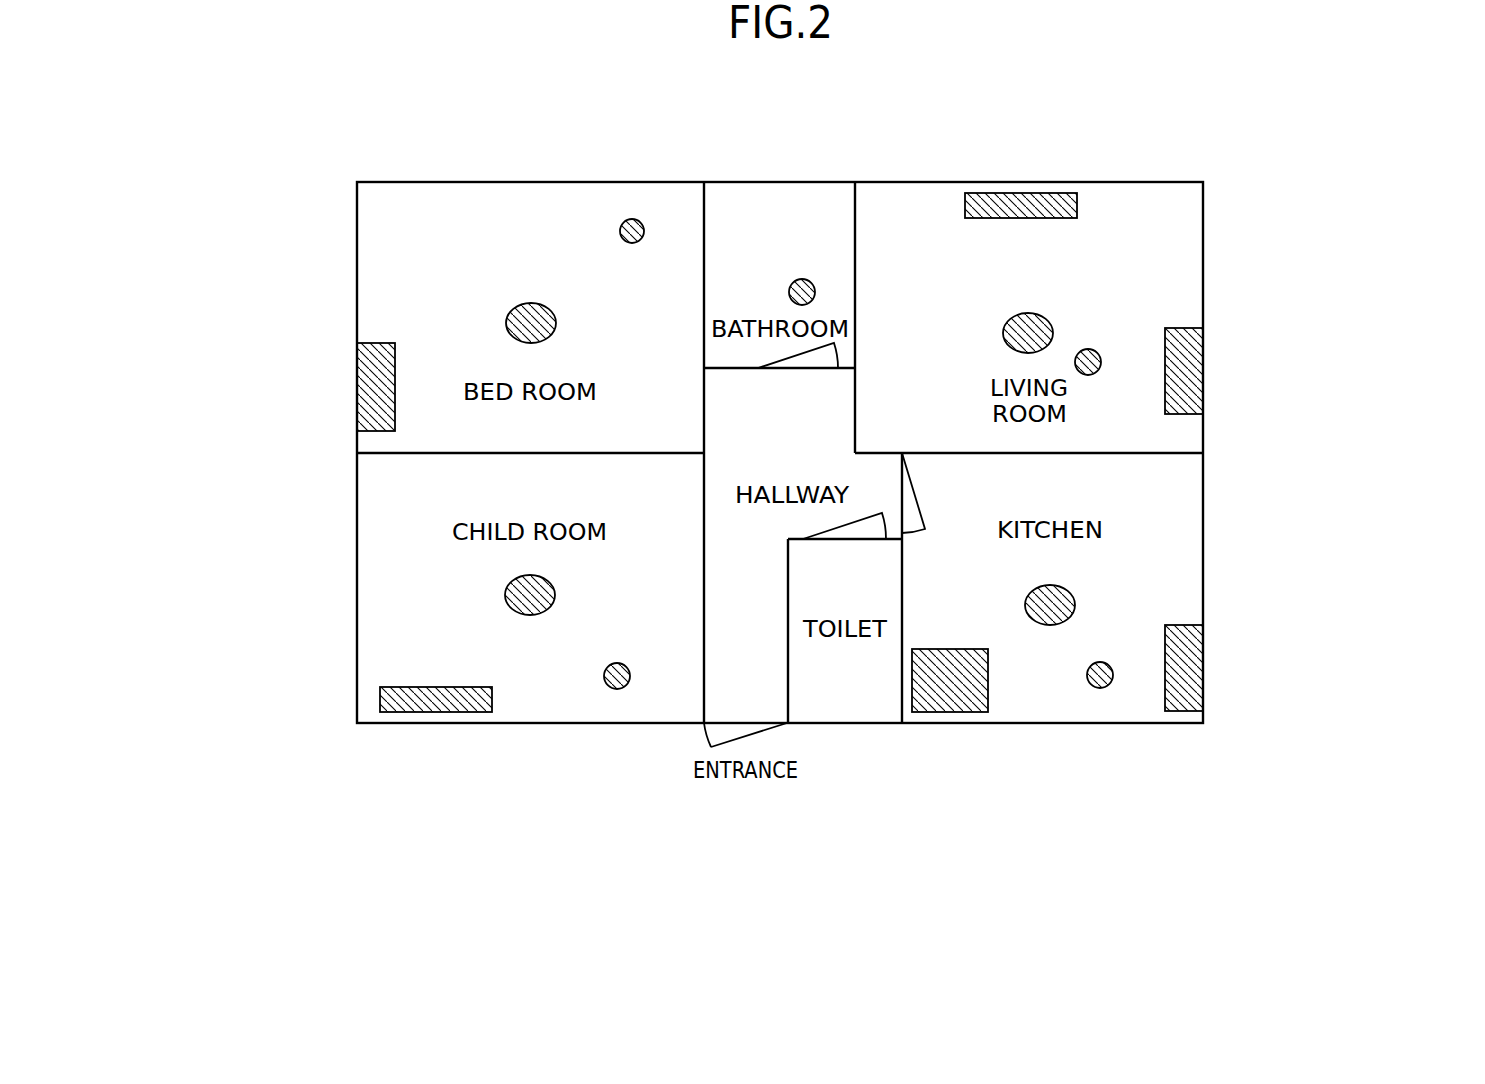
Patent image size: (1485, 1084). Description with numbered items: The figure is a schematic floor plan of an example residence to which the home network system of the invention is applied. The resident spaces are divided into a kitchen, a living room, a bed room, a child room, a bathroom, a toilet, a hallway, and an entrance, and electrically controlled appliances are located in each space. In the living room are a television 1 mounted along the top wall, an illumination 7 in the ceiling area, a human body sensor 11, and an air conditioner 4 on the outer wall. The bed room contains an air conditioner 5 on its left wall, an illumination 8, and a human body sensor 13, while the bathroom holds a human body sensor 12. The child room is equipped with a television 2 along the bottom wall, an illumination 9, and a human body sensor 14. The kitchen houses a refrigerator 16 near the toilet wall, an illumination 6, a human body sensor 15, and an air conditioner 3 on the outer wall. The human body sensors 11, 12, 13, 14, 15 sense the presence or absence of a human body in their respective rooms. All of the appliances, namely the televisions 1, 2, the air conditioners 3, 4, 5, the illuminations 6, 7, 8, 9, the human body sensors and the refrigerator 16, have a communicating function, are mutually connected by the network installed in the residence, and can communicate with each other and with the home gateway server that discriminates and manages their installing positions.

The television 1 is at (1022, 193).
The television 2 is at (432, 712).
The air conditioner 3 is at (1203, 667).
The air conditioner 4 is at (1203, 371).
The air conditioner 5 is at (357, 386).
The illumination 6 is at (1072, 590).
The illumination 7 is at (1015, 315).
The illumination 8 is at (531, 303).
The illumination 9 is at (527, 617).
The human body sensor 11 is at (1090, 349).
The human body sensor 12 is at (802, 279).
The human body sensor 13 is at (632, 218).
The human body sensor 14 is at (617, 688).
The human body sensor 15 is at (1100, 688).
The refrigerator 16 is at (948, 712).